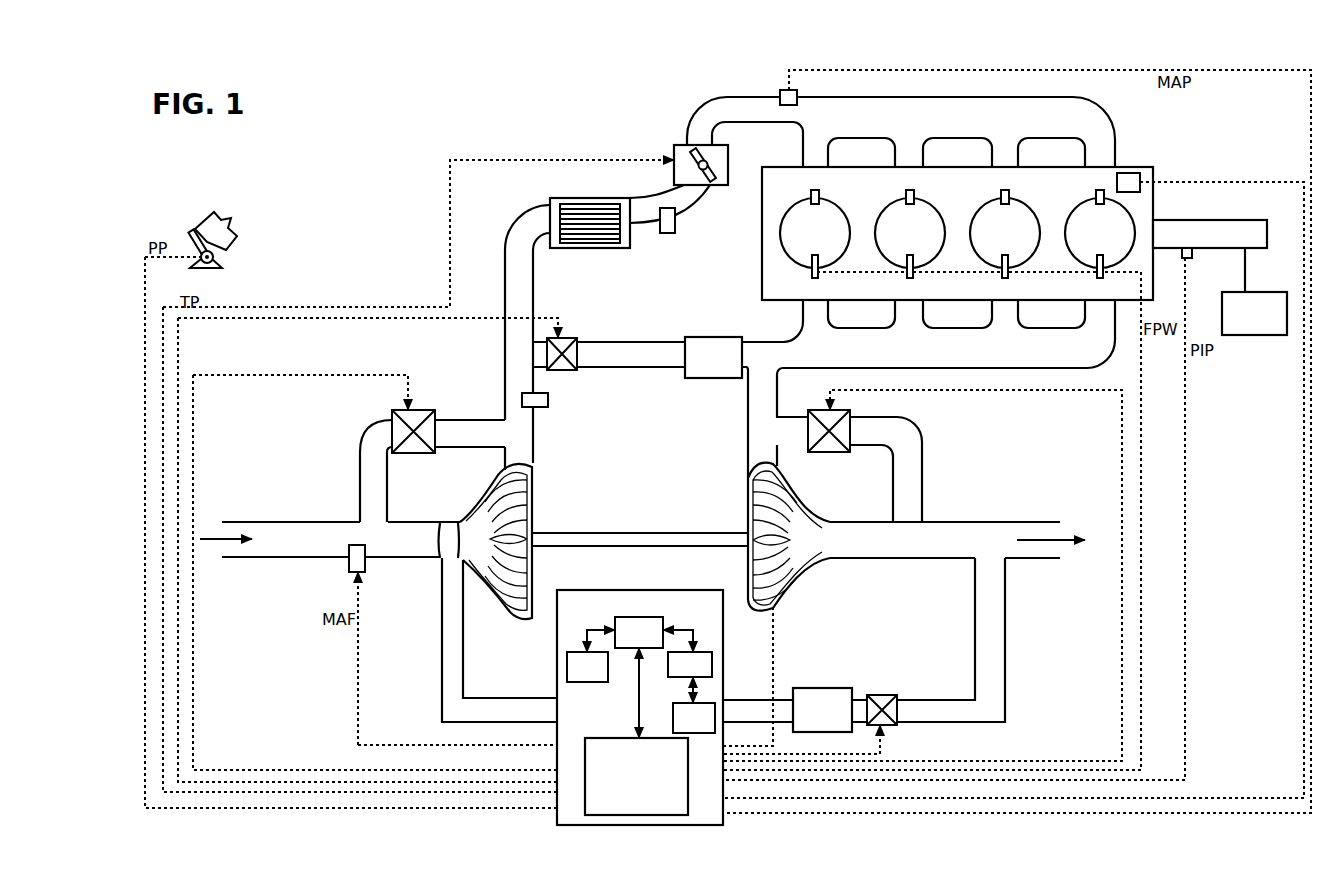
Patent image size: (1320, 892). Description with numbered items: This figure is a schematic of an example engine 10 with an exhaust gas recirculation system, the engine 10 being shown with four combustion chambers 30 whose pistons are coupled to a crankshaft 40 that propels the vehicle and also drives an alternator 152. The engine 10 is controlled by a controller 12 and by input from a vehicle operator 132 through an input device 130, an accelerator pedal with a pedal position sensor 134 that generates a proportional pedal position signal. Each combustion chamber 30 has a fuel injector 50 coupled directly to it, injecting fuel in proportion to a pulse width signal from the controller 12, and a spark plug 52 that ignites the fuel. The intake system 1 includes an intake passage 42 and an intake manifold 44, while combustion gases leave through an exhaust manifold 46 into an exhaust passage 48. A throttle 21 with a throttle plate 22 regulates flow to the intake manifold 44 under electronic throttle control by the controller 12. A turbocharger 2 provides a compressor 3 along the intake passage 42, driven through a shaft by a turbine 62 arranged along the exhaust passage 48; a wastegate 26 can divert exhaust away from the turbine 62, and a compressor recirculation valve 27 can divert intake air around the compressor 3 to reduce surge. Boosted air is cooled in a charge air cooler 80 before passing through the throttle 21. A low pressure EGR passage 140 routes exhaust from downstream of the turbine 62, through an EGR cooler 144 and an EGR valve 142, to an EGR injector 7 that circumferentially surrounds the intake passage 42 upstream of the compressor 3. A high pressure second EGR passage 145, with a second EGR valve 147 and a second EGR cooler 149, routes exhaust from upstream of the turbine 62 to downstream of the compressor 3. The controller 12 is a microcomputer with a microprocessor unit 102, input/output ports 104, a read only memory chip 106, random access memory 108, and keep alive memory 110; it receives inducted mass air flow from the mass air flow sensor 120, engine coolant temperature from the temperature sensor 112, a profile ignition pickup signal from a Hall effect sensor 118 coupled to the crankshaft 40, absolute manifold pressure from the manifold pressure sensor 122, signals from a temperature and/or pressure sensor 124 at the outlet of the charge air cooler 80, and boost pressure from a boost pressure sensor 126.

The intake system 1 is at (396, 283).
The turbocharger 2 is at (622, 505).
The compressor 3 is at (492, 590).
The EGR injector 7 is at (448, 548).
The engine 10 is at (1055, 193).
The controller 12 is at (600, 723).
The throttle 21 is at (684, 145).
The throttle plate 22 is at (712, 178).
The wastegate 26 is at (851, 417).
The compressor bypass or recirculation valve (CRV) 27 is at (392, 422).
The combustion chamber 30 is at (825, 243).
The crankshaft 40 is at (1167, 220).
The intake passage 42 is at (278, 559).
The intake manifold 44 is at (848, 127).
The exhaust manifold 46 is at (968, 365).
The exhaust passage 48 is at (772, 410).
The fuel injector 50 is at (811, 277).
The spark plug 52 is at (821, 197).
The turbine 62 is at (790, 500).
The charge air cooler (CAC) 80 is at (562, 198).
The microprocessor unit 102 is at (607, 622).
The input/output ports 104 is at (676, 812).
The read only memory chip 106 is at (563, 674).
The random access memory 108 is at (712, 655).
The keep alive memory 110 is at (716, 705).
The temperature sensor 112 is at (1132, 173).
The Hall effect sensor 118 is at (1183, 259).
The MAF sensor 120 is at (365, 560).
The manifold pressure sensor 122 is at (797, 92).
The temperature and/or pressure sensor 124 is at (672, 234).
The boost pressure sensor 126 is at (548, 405).
The input device 130 is at (192, 238).
The vehicle operator 132 is at (233, 226).
The pedal position sensor 134 is at (213, 258).
The EGR passage 140 is at (1005, 640).
The EGR valve 142 is at (893, 695).
The EGR cooler 144 is at (837, 722).
The second EGR passage 145 is at (625, 342).
The second EGR valve 147 is at (574, 338).
The second EGR cooler 149 is at (729, 368).
The alternator 152 is at (1270, 324).